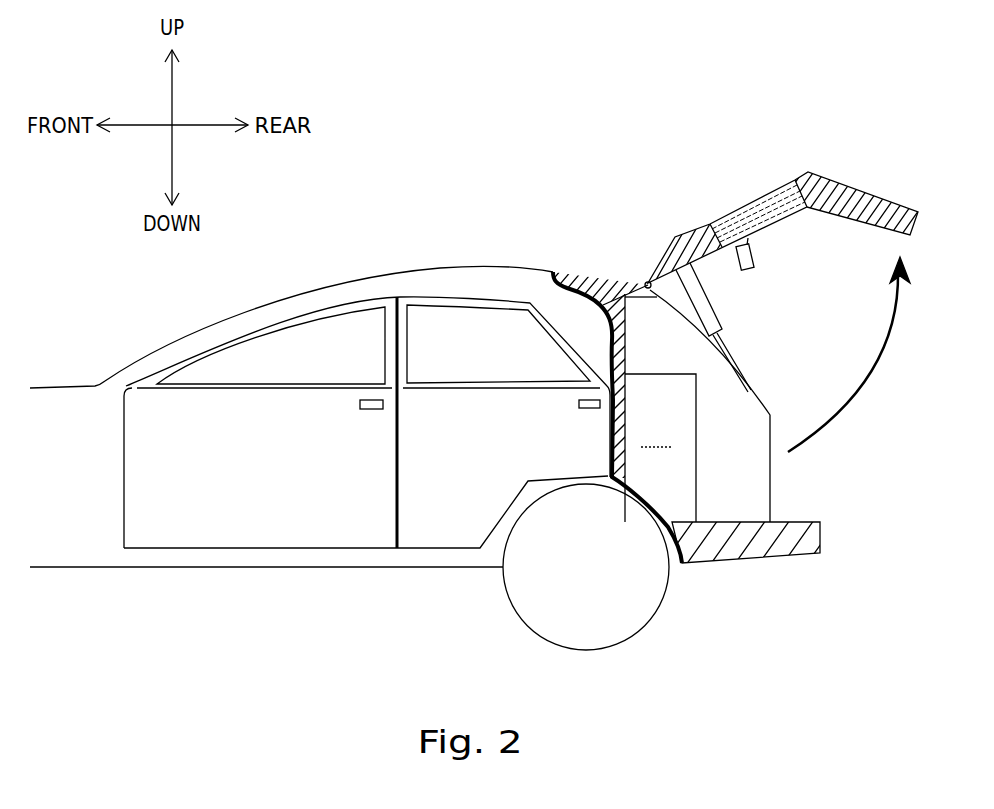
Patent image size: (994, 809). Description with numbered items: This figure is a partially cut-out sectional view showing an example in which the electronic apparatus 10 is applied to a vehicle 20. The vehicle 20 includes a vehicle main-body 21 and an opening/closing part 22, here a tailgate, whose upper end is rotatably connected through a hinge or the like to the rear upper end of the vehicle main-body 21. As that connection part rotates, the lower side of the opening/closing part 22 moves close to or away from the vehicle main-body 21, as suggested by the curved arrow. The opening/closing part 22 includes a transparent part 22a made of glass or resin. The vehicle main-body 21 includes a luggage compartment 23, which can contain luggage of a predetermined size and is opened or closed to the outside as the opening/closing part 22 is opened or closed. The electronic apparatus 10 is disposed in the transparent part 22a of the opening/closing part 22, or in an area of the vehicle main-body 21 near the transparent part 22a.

The electronic apparatus 10 is at (753, 260).
The vehicle 20 is at (651, 166).
The vehicle main-body 21 is at (462, 267).
The opening/closing part 22 is at (845, 180).
The transparent part 22a is at (746, 200).
The luggage compartment 23 is at (730, 521).